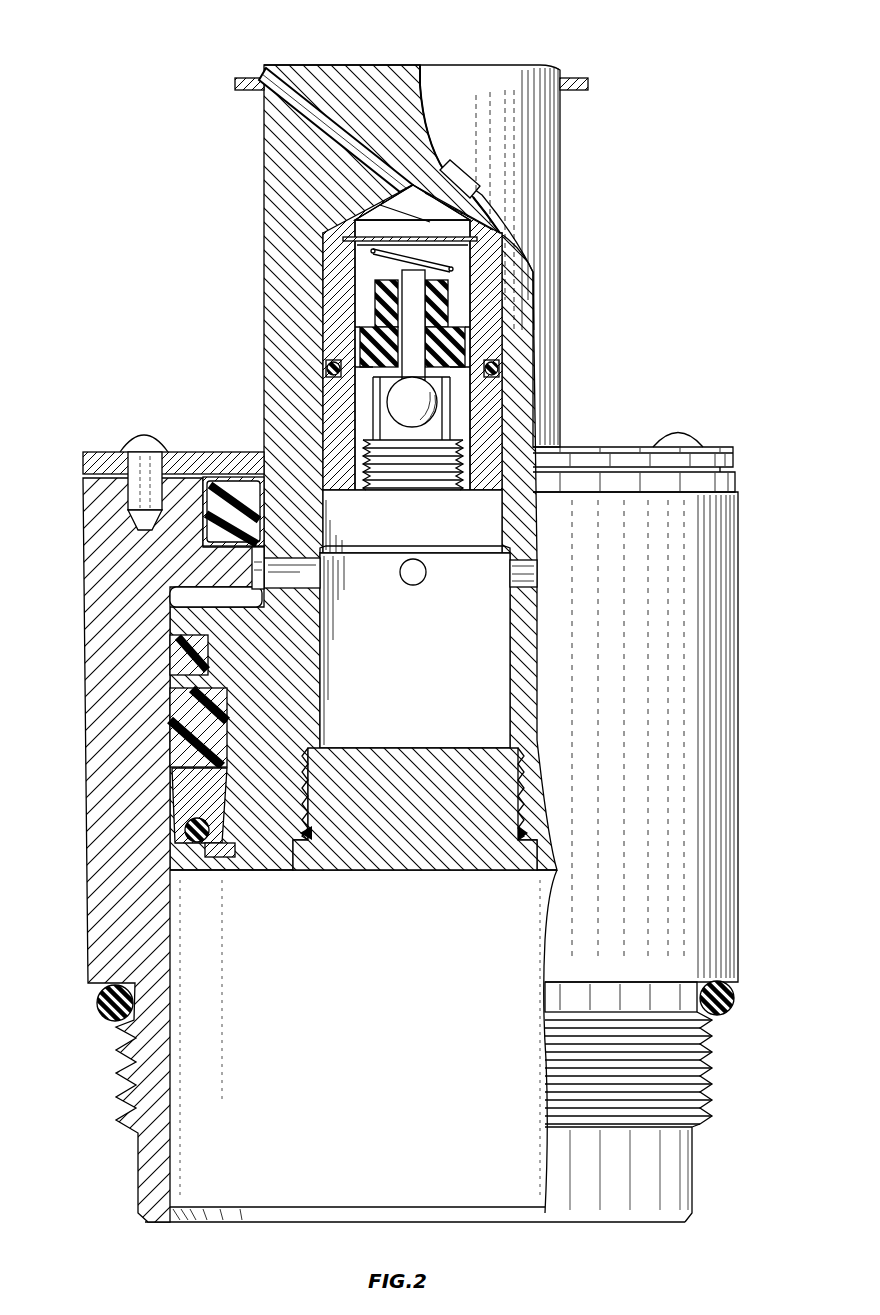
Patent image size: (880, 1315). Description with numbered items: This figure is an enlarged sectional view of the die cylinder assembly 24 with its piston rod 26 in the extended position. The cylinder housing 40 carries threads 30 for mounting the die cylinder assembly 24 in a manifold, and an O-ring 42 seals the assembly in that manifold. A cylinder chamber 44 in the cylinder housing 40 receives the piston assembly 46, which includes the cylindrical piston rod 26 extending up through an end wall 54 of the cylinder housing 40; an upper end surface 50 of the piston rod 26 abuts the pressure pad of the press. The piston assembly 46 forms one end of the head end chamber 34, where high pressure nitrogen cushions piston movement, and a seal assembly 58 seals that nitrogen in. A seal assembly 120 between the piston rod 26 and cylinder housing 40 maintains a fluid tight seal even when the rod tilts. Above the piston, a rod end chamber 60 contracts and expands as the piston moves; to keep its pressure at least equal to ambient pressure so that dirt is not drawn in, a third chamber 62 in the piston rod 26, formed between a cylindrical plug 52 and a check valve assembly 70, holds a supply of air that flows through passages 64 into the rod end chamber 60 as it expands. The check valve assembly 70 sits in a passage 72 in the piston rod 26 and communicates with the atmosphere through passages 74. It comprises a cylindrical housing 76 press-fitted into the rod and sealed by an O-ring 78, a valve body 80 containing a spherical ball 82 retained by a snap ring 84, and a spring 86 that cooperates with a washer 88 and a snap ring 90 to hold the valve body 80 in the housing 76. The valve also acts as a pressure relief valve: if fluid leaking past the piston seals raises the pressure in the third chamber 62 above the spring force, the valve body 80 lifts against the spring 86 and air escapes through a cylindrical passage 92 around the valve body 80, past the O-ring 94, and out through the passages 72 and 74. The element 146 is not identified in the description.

The die cylinder assembly 24 is at (423, 620).
The piston rod 26 is at (530, 124).
The threads 30 is at (712, 1050).
The head end chamber 34 is at (376, 1096).
The cylinder housing 40 is at (738, 588).
The O-ring 42 is at (735, 990).
The cylinder chamber 44 is at (185, 895).
The piston assembly 46 is at (245, 428).
The upper end surface 50 is at (490, 64).
The cylindrical plug 52 is at (432, 850).
The end wall 54 is at (625, 447).
The seal assembly 58 is at (203, 718).
The rod end chamber 60 is at (187, 593).
The third chamber 62 is at (440, 673).
The passages 64 is at (413, 585).
The check valve assembly 70 is at (503, 303).
The passage 72 is at (433, 208).
The passages 74 is at (352, 152).
The cylindrical housing 76 is at (487, 267).
The O-ring 78 is at (497, 367).
The valve body 80 is at (450, 340).
The spherical ball 82 is at (440, 402).
The snap ring 84 is at (425, 442).
The spring 86 is at (375, 278).
The washer 88 is at (372, 252).
The snap ring 90 is at (363, 222).
The cylindrical passage 92 is at (387, 395).
The O-ring 94 is at (347, 360).
The seal assembly 120 is at (212, 462).
The port 146 is at (255, 573).